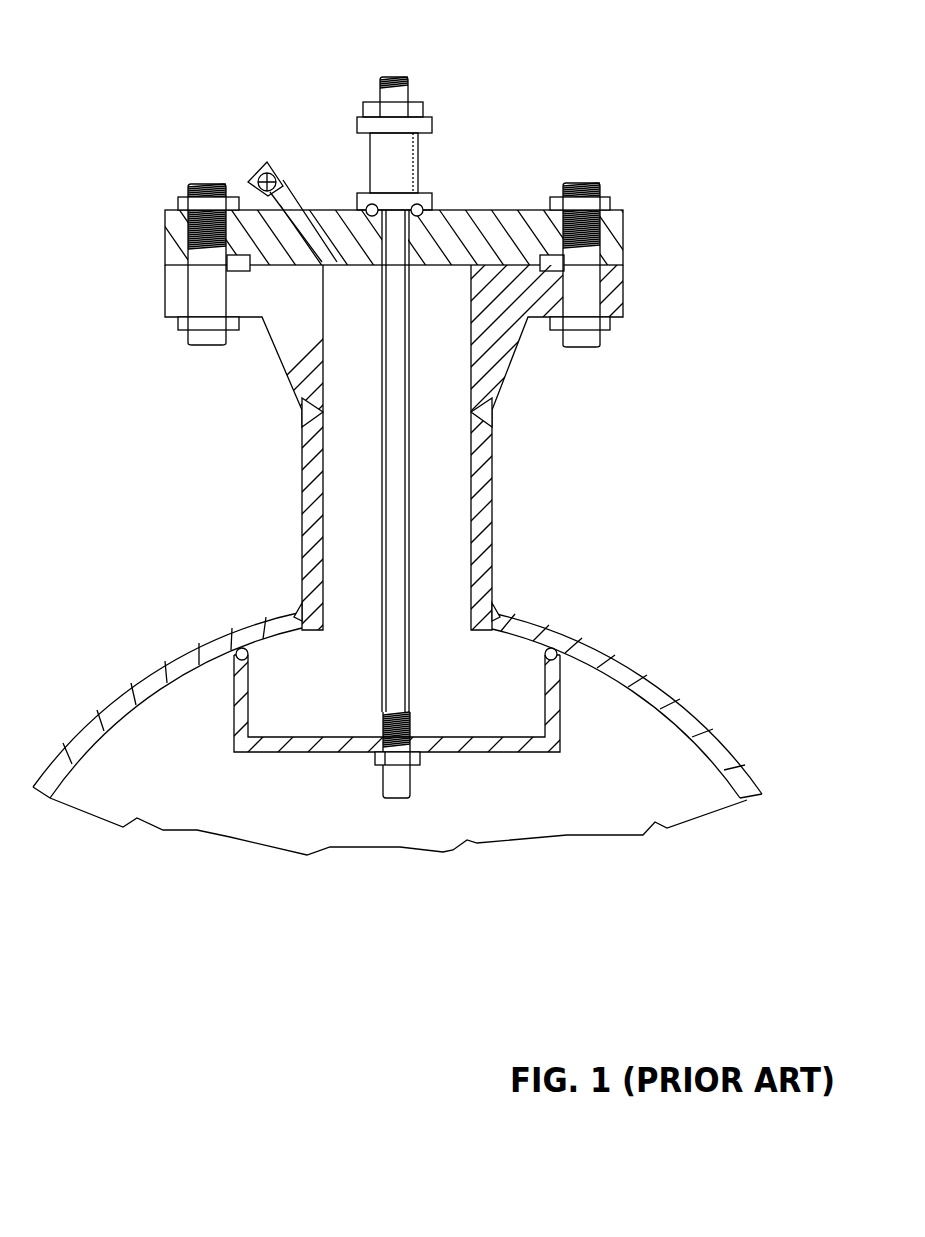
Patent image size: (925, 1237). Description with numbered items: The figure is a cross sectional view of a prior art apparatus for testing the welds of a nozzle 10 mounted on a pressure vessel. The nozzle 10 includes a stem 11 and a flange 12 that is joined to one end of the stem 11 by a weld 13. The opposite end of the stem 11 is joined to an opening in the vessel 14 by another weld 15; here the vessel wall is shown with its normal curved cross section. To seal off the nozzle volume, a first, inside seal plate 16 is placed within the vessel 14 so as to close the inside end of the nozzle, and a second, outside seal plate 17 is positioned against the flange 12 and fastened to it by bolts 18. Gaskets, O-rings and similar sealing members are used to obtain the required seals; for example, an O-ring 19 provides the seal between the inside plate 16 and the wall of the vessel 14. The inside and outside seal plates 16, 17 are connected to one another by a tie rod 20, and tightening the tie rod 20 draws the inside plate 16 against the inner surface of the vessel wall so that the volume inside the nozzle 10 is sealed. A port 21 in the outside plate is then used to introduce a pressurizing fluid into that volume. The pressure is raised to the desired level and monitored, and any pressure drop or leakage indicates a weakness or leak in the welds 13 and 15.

The nozzle 10 is at (658, 496).
The stem 11 is at (490, 538).
The flange 12 is at (292, 335).
The weld 13 is at (300, 410).
The vessel 14 is at (717, 735).
The weld 15 is at (302, 612).
The inside seal plate 16 is at (513, 753).
The outside seal plate 17 is at (488, 210).
The bolts 18 is at (205, 186).
The O-ring 19 is at (249, 653).
The tie rod 20 is at (398, 410).
The port 21 is at (292, 188).